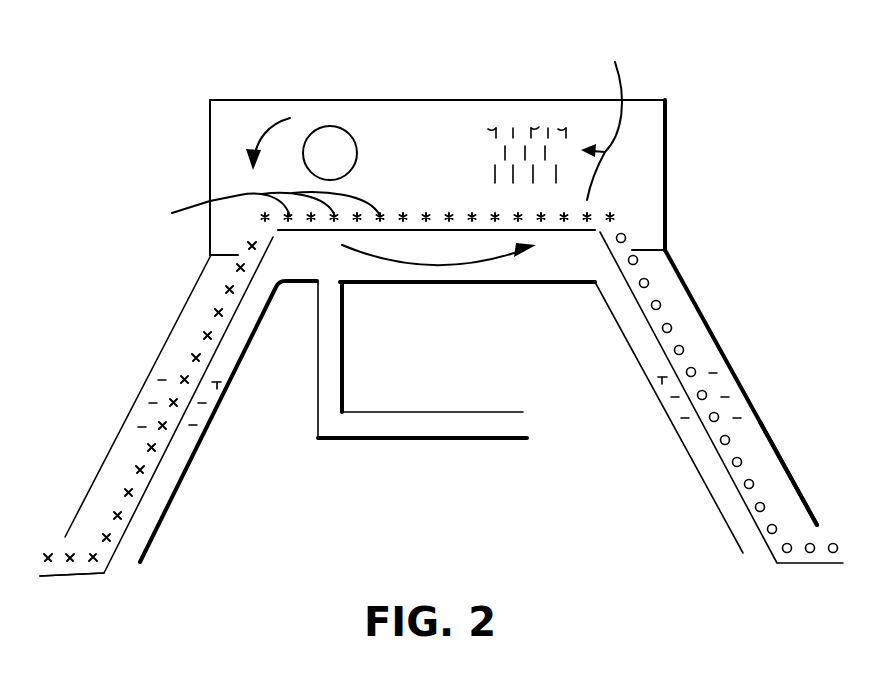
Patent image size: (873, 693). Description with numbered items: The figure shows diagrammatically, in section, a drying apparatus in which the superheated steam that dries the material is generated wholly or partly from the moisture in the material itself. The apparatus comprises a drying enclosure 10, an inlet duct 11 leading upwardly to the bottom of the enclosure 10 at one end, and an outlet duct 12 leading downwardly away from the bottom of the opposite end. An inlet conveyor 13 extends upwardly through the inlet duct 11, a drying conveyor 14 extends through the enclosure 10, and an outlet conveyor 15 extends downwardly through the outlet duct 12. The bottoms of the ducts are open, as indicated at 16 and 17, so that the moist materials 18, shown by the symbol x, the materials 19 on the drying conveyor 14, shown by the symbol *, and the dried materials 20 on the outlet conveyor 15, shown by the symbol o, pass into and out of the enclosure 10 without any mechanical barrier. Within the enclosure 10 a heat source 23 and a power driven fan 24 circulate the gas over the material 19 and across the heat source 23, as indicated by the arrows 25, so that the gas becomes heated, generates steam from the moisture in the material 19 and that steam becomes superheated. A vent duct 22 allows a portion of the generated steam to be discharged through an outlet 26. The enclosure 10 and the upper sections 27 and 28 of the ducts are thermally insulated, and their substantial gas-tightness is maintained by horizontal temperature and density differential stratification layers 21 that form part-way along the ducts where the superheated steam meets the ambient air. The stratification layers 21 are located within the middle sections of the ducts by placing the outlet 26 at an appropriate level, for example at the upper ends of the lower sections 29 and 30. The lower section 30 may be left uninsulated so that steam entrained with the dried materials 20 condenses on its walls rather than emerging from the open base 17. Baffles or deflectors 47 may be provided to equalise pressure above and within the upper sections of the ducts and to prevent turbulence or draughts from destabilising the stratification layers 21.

The drying enclosure 10 is at (372, 100).
The inlet duct 11 is at (247, 327).
The outlet duct 12 is at (625, 323).
The inlet conveyor 13 is at (152, 450).
The drying conveyor 14 is at (567, 232).
The outlet conveyor 15 is at (725, 440).
The open bottom of inlet duct 16 is at (127, 557).
The open base of outlet duct 17 is at (753, 553).
The moist materials 18 is at (152, 452).
The materials being dried 19 is at (376, 210).
The dried materials 20 is at (712, 452).
The stratification layer 21 is at (200, 428).
The vent duct 22 is at (343, 366).
The heat source 23 is at (566, 128).
The power driven fan 24 is at (313, 132).
The arrows 25 is at (262, 130).
The outlet from vent duct 26 is at (520, 422).
The upper section of inlet duct 27 is at (193, 283).
The upper section of outlet duct 28 is at (680, 270).
The lower section of inlet duct 29 is at (107, 430).
The lower section of outlet duct 30 is at (742, 387).
The baffles and/or deflectors 47 is at (222, 252).